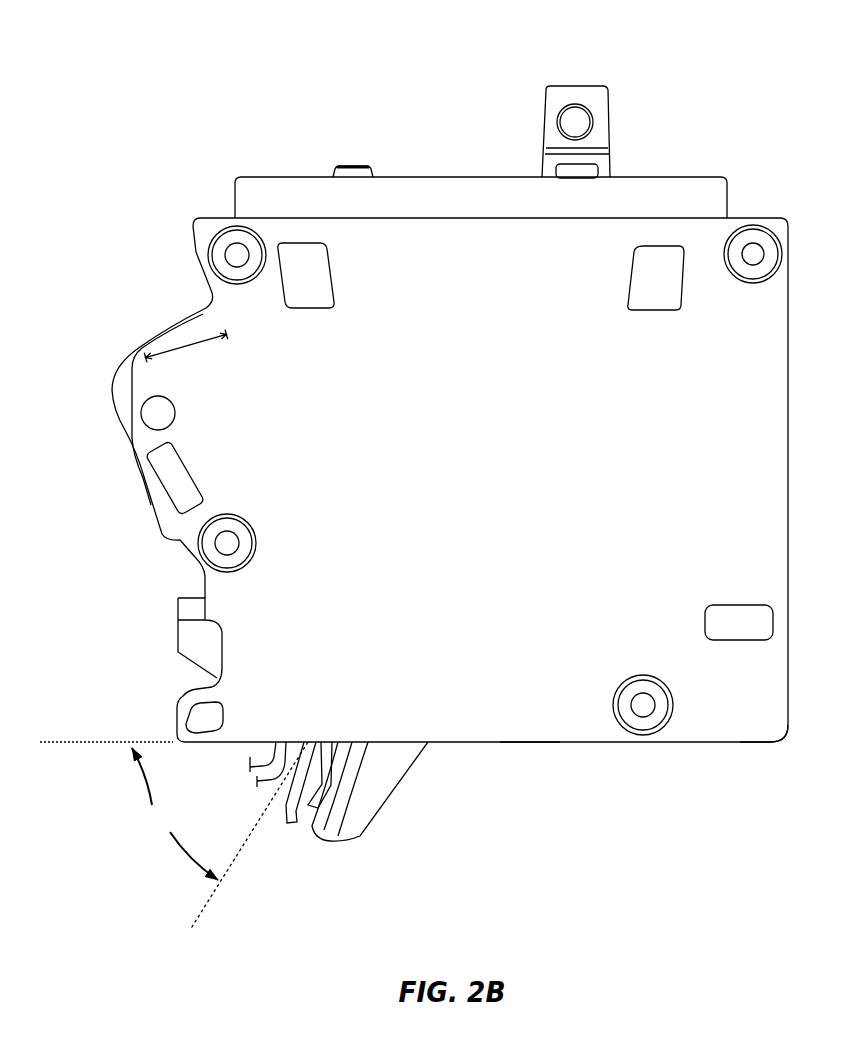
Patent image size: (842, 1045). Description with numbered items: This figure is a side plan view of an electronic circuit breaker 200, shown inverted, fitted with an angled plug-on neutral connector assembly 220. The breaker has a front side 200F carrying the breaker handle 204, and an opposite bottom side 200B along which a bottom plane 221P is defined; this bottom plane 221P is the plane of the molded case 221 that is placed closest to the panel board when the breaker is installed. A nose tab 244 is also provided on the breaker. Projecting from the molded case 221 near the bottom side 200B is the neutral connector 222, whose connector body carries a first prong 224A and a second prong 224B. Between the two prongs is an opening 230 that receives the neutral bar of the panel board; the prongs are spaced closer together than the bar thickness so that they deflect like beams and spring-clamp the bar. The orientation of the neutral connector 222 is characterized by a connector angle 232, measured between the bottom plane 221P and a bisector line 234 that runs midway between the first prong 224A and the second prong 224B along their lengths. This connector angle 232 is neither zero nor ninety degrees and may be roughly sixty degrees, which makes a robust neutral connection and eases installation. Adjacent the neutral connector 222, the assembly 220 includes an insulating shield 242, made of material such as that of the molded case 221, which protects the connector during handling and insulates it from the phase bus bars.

The circuit breaker 200 is at (221, 163).
The front side 200F is at (452, 173).
The bottom side 200B is at (541, 750).
The breaker handle 204 is at (572, 86).
The molded case 221 is at (688, 750).
The bottom plane 221P is at (93, 740).
The neutral connector 222 is at (278, 740).
The first prong 224A is at (252, 780).
The second prong 224B is at (292, 824).
The opening 230 is at (258, 795).
The connector angle 232 is at (175, 814).
The bisector line 234 is at (204, 918).
The shield 242 is at (352, 798).
The nose tab 244 is at (180, 692).
The angled plug-on neutral connector assembly 220 is at (267, 828).